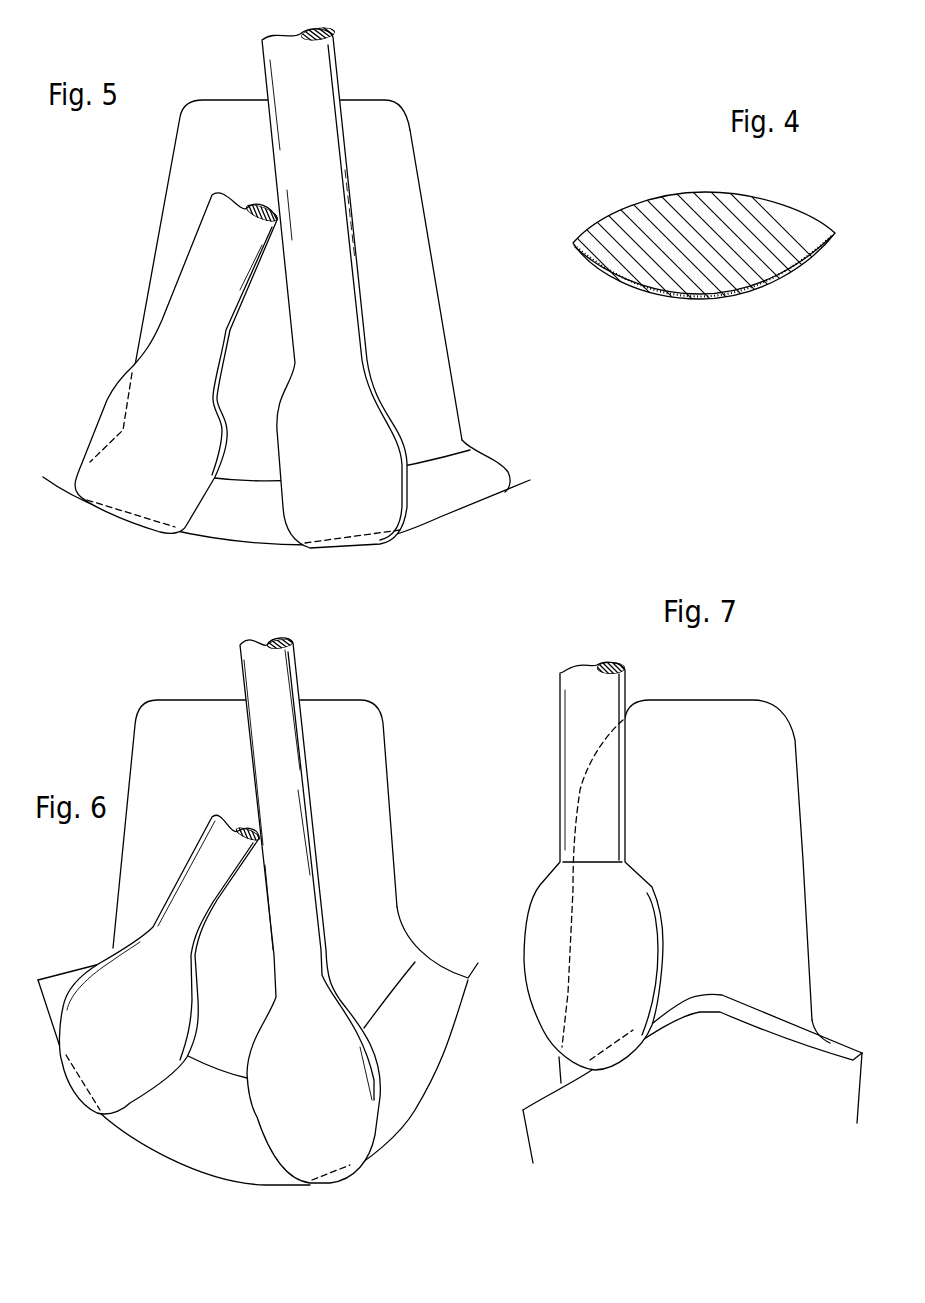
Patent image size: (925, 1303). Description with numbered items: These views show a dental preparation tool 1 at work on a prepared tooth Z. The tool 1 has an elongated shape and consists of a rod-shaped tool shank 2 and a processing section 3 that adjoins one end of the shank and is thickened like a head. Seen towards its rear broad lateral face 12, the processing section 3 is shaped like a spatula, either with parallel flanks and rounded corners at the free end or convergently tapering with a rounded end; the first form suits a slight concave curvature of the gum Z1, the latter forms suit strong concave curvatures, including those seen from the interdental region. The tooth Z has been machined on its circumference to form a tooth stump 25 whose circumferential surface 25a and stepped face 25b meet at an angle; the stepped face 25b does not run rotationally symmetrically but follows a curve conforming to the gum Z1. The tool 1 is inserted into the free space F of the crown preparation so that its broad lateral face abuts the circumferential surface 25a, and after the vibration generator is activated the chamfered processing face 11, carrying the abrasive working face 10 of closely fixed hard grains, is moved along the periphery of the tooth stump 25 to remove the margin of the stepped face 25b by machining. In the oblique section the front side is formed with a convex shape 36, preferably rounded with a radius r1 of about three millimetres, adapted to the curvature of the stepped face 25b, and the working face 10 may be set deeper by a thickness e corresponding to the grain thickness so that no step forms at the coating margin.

In FIG. 5, the tool 1 is at (292, 319).
In FIG. 6, the tool 1 is at (240, 947).
In FIG. 7, the tool 1 is at (585, 896).
In FIG. 5, the tool shank 2 is at (292, 319).
In FIG. 6, the tool shank 2 is at (240, 947).
In FIG. 7, the tool shank 2 is at (585, 896).
In FIG. 5, the processing section 3 is at (292, 319).
In FIG. 4, the processing section 3 is at (665, 219).
In FIG. 6, the processing section 3 is at (240, 947).
In FIG. 7, the processing section 3 is at (585, 896).
In FIG. 5, the rear broad lateral face 12 is at (322, 72).
In FIG. 4, the rear broad lateral face 12 is at (635, 215).
In FIG. 6, the rear broad lateral face 12 is at (240, 947).
In FIG. 4, the abrasive working face 10 is at (708, 297).
In FIG. 6, the abrasive working face 10 is at (240, 947).
In FIG. 7, the abrasive working face 10 is at (585, 896).
In FIG. 4, the chamfered processing face 11 is at (708, 297).
In FIG. 6, the chamfered processing face 11 is at (210, 838).
In FIG. 7, the chamfered processing face 11 is at (567, 695).
In FIG. 4, the convex shape 36 is at (708, 297).
In FIG. 4, the thickness e is at (708, 297).
In FIG. 4, the radius r1 is at (672, 302).
In FIG. 5, the tooth Z is at (314, 329).
In FIG. 6, the tooth Z is at (258, 927).
In FIG. 7, the tooth Z is at (692, 918).
In FIG. 5, the gum Z1 is at (496, 559).
In FIG. 5, the tooth stump 25 is at (456, 275).
In FIG. 6, the tooth stump 25 is at (217, 858).
In FIG. 7, the tooth stump 25 is at (740, 846).
In FIG. 5, the circumferential surface 25a is at (420, 183).
In FIG. 6, the circumferential surface 25a is at (133, 742).
In FIG. 7, the circumferential surface 25a is at (795, 772).
In FIG. 5, the stepped face 25b is at (395, 454).
In FIG. 6, the stepped face 25b is at (269, 1030).
In FIG. 7, the stepped face 25b is at (692, 1059).
In FIG. 5, the free space F is at (492, 460).
In FIG. 6, the free space F is at (435, 960).
In FIG. 7, the free space F is at (840, 1042).